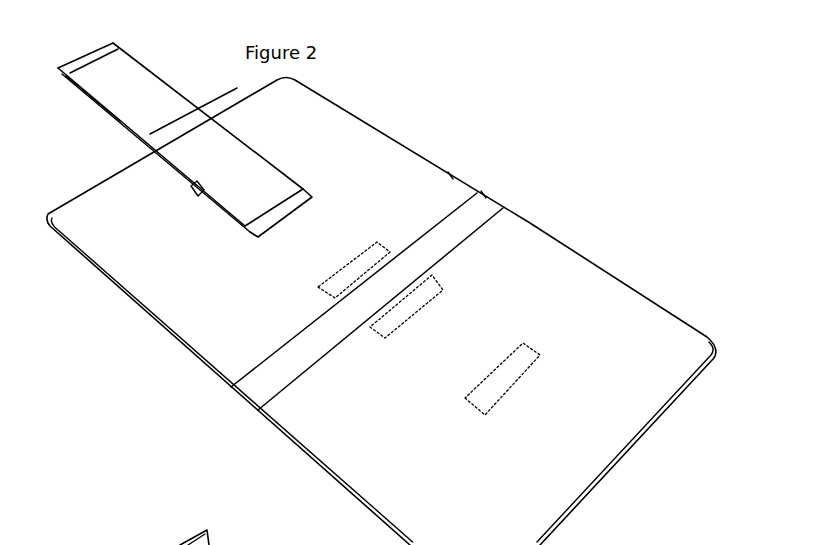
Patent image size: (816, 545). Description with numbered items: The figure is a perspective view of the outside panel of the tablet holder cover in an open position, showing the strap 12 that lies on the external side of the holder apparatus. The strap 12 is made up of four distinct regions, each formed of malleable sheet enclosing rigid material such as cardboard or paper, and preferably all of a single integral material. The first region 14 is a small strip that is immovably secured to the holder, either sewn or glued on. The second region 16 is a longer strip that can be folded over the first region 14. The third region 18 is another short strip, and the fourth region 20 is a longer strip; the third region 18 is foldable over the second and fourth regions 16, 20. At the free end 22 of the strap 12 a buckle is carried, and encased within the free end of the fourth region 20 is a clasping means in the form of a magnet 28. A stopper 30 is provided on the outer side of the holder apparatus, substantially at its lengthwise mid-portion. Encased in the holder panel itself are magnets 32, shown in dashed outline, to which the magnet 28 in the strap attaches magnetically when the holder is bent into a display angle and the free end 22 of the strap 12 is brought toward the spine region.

The strap 12 is at (153, 70).
The first region 14 is at (303, 191).
The second region 16 is at (262, 152).
The third region 18 is at (229, 92).
The fourth region 20 is at (121, 103).
The free end 22 is at (113, 43).
The magnet 28 is at (228, 537).
The stopper 30 is at (195, 193).
The magnets 32 is at (378, 244).